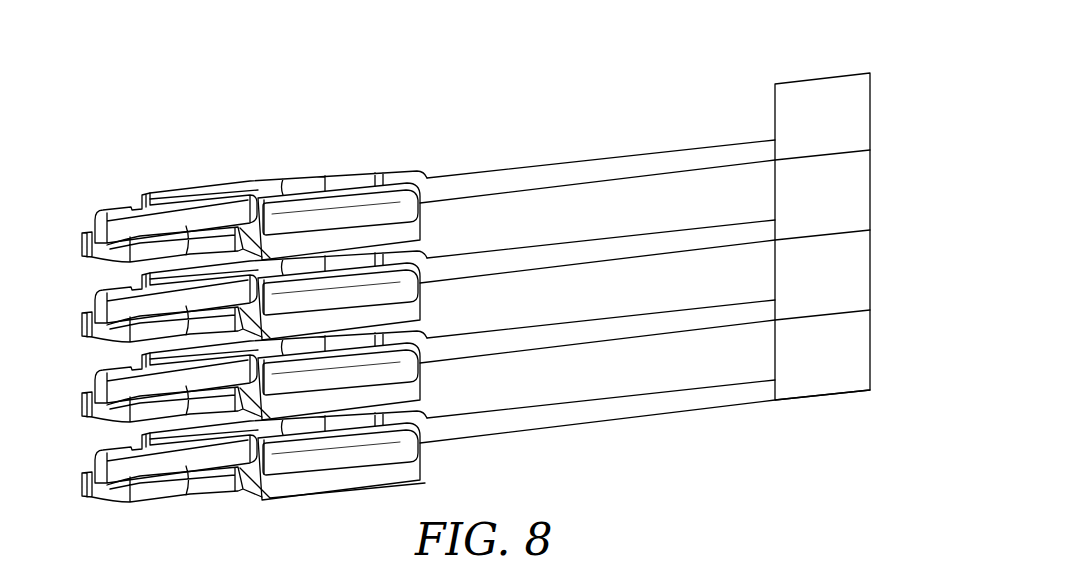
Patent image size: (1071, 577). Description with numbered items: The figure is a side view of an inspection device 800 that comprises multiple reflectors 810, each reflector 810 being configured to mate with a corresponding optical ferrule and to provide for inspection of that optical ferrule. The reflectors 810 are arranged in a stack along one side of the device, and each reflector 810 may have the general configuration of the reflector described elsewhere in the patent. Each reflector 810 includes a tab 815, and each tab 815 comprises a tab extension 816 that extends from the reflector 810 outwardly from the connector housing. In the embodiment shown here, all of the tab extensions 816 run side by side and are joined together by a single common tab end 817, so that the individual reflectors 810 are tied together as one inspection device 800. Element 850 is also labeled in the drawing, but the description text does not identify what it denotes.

The inspection device 800 is at (178, 124).
The reflector 810 is at (112, 412).
The tab 815 is at (600, 52).
The tab extension 816 is at (579, 172).
The common tab end 817 is at (862, 191).
The terminal housing 850 is at (116, 297).